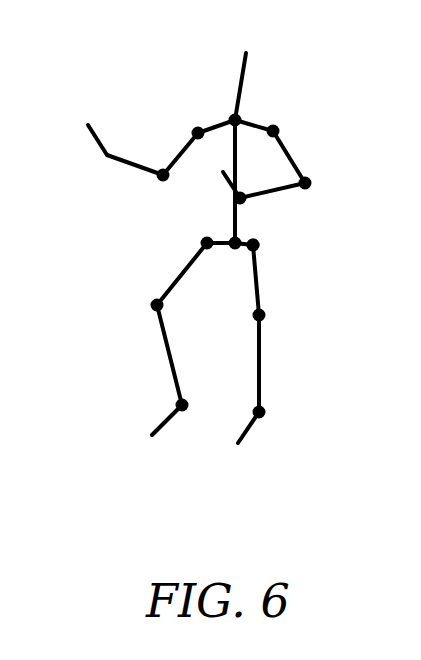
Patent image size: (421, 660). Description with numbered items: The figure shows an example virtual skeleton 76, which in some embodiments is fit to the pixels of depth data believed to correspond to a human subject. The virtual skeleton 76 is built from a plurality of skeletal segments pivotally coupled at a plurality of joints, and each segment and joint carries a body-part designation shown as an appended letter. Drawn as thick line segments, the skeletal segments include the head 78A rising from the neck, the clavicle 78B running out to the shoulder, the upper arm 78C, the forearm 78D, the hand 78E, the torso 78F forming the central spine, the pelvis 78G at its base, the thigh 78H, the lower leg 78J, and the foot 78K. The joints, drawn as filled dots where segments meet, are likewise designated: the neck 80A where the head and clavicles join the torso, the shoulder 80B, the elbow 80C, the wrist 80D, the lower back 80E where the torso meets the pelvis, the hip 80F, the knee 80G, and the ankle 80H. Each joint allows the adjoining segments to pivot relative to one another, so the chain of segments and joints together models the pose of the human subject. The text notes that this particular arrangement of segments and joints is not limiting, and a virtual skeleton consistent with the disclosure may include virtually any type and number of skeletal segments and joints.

The virtual skeleton 76 is at (206, 252).
The head skeletal segment 78A is at (266, 38).
The clavicle skeletal segment 78B is at (252, 121).
The upper arm skeletal segment 78C is at (190, 143).
The forearm skeletal segment 78D is at (280, 192).
The hand skeletal segment 78E is at (95, 136).
The torso skeletal segment 78F is at (235, 212).
The pelvis skeletal segment 78G is at (219, 248).
The thigh skeletal segment 78H is at (182, 285).
The lower leg skeletal segment 78J is at (262, 365).
The foot skeletal segment 78K is at (162, 426).
The neck joint 80A is at (230, 120).
The shoulder joint 80B is at (275, 130).
The elbow joint 80C is at (161, 178).
The wrist joint 80D is at (243, 190).
The lower back joint 80E is at (255, 243).
The hip joint 80F is at (256, 250).
The knee joint 80G is at (262, 315).
The ankle joint 80H is at (258, 413).